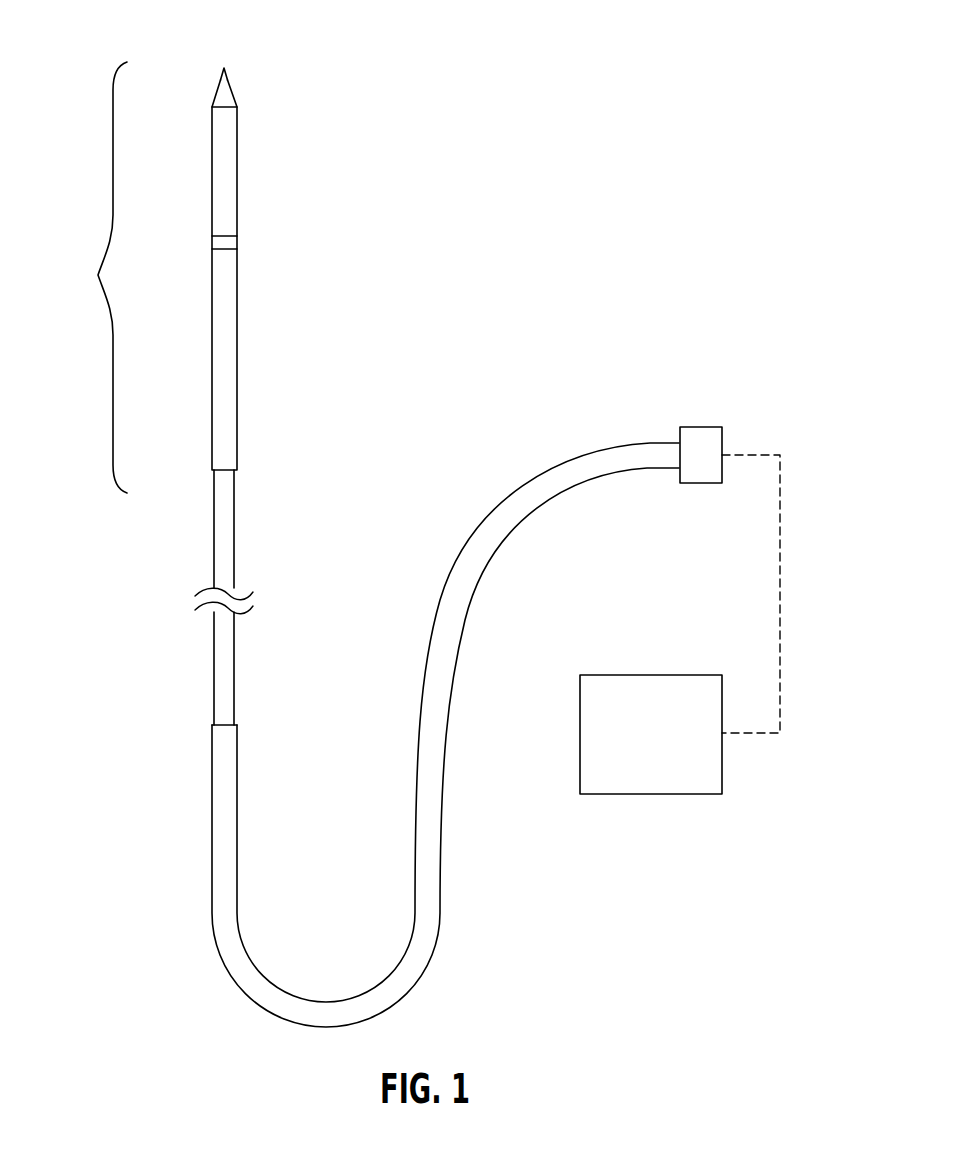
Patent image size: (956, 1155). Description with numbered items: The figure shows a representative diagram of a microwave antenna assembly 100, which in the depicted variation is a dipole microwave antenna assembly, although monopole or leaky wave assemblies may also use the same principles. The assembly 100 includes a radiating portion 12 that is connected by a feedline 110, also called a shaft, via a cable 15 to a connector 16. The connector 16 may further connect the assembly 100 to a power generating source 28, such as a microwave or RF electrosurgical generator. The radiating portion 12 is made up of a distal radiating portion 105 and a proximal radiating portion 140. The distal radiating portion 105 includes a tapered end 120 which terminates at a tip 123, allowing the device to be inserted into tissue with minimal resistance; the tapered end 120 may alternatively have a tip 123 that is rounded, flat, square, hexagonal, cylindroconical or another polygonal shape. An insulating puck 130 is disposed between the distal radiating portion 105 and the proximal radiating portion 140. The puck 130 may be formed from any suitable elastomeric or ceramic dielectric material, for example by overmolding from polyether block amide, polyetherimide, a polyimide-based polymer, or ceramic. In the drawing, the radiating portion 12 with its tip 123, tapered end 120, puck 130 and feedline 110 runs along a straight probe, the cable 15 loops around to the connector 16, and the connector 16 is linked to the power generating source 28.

The microwave antenna assembly 100 is at (594, 66).
The radiating portion 12 is at (97, 277).
The tip 123 is at (218, 82).
The tapered end 120 is at (215, 90).
The distal radiating portion 105 is at (272, 163).
The insulating puck 130 is at (238, 242).
The proximal radiating portion 140 is at (272, 348).
The feedline 110 is at (237, 542).
The cable 15 is at (211, 775).
The connector 16 is at (700, 427).
The power generating source 28 is at (653, 675).